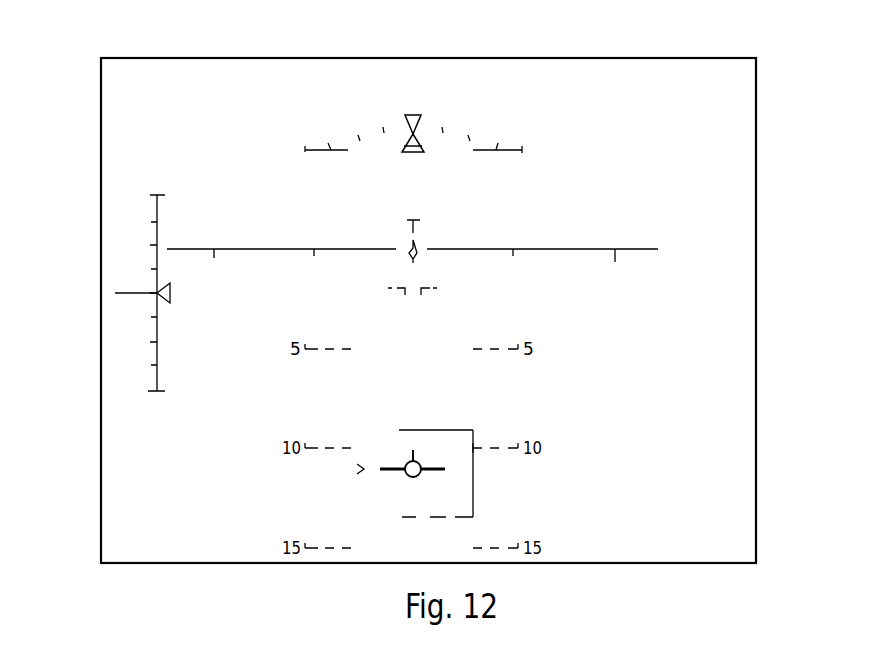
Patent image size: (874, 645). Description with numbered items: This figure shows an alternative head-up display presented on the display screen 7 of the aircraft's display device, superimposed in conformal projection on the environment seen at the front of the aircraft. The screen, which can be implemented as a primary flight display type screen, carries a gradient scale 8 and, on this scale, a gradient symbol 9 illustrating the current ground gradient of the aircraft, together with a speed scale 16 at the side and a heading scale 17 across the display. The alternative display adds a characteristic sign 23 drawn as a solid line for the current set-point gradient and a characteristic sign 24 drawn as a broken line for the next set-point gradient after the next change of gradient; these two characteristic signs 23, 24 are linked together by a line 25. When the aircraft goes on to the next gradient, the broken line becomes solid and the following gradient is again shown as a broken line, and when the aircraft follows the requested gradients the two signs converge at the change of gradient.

The display screen 7 is at (664, 564).
The gradient scale 8 is at (511, 130).
The gradient symbol 9 is at (405, 476).
The speed scale 16 is at (132, 178).
The heading scale 17 is at (672, 247).
The characteristic sign 23 is at (463, 427).
The characteristic sign 24 is at (478, 517).
The line 25 is at (478, 479).